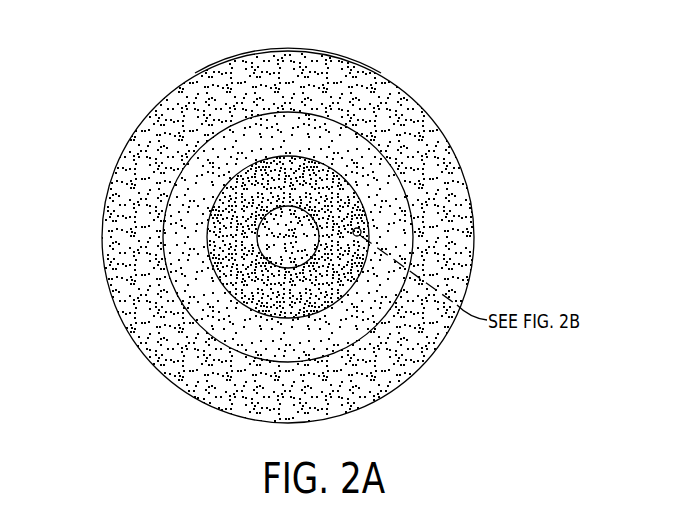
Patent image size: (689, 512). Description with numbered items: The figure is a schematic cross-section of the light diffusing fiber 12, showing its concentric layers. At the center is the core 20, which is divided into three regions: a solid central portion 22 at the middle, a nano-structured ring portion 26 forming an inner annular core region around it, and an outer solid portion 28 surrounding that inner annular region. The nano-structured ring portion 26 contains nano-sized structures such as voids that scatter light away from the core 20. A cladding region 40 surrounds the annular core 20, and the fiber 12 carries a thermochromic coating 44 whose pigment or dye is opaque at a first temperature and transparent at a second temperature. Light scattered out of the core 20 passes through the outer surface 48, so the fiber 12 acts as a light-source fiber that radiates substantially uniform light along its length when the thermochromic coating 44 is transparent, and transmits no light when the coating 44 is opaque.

The light diffusing fiber 12 is at (298, 211).
The core 20 is at (360, 228).
The solid central portion 22 is at (302, 227).
The nano-structured ring portion 26 is at (342, 193).
The outer solid portion 28 is at (368, 168).
The cladding region 40 is at (400, 112).
The thermochromic coating 44 is at (356, 52).
The outer surface 48 is at (97, 198).